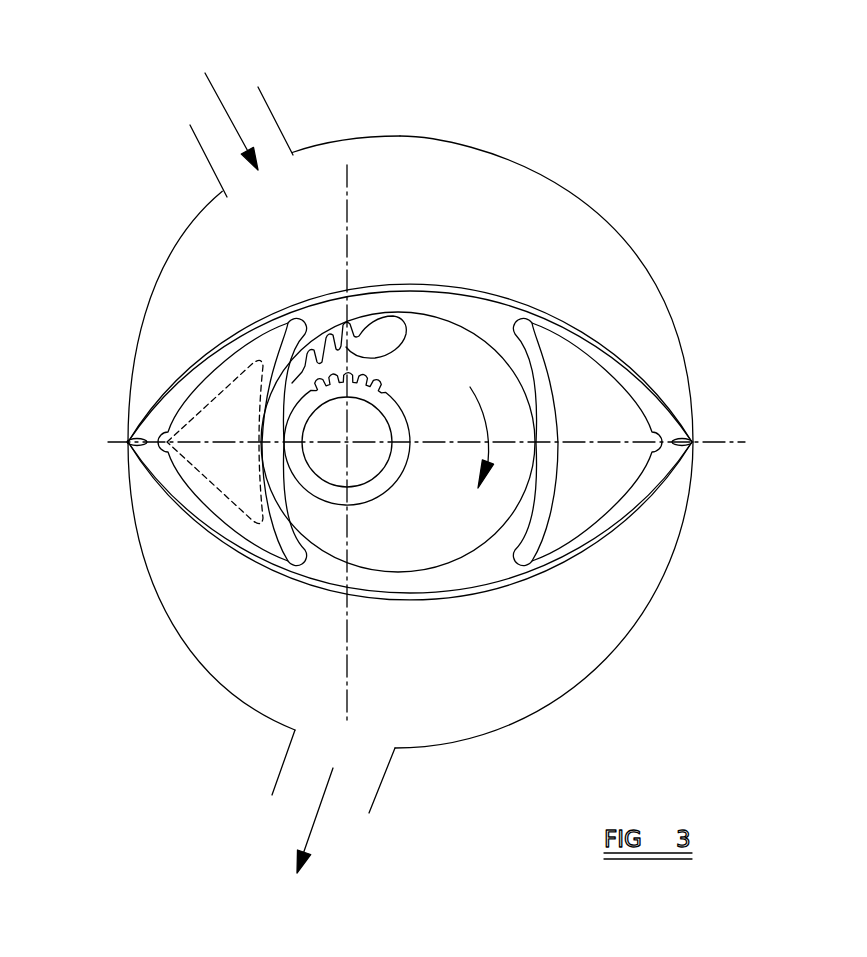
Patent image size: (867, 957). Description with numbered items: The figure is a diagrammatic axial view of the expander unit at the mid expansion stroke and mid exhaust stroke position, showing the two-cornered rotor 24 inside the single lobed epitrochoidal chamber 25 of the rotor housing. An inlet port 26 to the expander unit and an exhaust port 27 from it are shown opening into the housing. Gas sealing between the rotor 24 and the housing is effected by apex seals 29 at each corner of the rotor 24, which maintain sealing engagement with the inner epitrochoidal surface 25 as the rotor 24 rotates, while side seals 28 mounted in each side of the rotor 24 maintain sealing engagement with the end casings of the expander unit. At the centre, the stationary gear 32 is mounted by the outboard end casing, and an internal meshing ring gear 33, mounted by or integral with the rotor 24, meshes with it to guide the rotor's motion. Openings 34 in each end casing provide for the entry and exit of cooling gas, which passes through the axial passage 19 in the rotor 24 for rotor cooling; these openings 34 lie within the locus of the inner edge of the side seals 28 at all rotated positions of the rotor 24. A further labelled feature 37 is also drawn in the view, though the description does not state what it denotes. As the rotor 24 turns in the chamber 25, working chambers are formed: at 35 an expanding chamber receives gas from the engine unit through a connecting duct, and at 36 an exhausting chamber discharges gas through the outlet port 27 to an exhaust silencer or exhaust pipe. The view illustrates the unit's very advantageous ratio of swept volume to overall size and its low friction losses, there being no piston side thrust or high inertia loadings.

The axial passage 19 is at (587, 441).
The 2-cornered rotor 24 is at (493, 330).
The single lobed epitrochoidal chamber 25 is at (620, 252).
The inlet port 26 is at (245, 115).
The exhaust port 27 is at (302, 783).
The side seals 28 is at (597, 358).
The apex seals 29 is at (130, 447).
The stationary gear 32 is at (393, 393).
The internal meshing ring gear 33 is at (402, 322).
The openings 34 is at (233, 470).
The expanding chamber 35 is at (441, 158).
The exhausting chamber 36 is at (535, 682).
The partition wall 37 is at (282, 345).